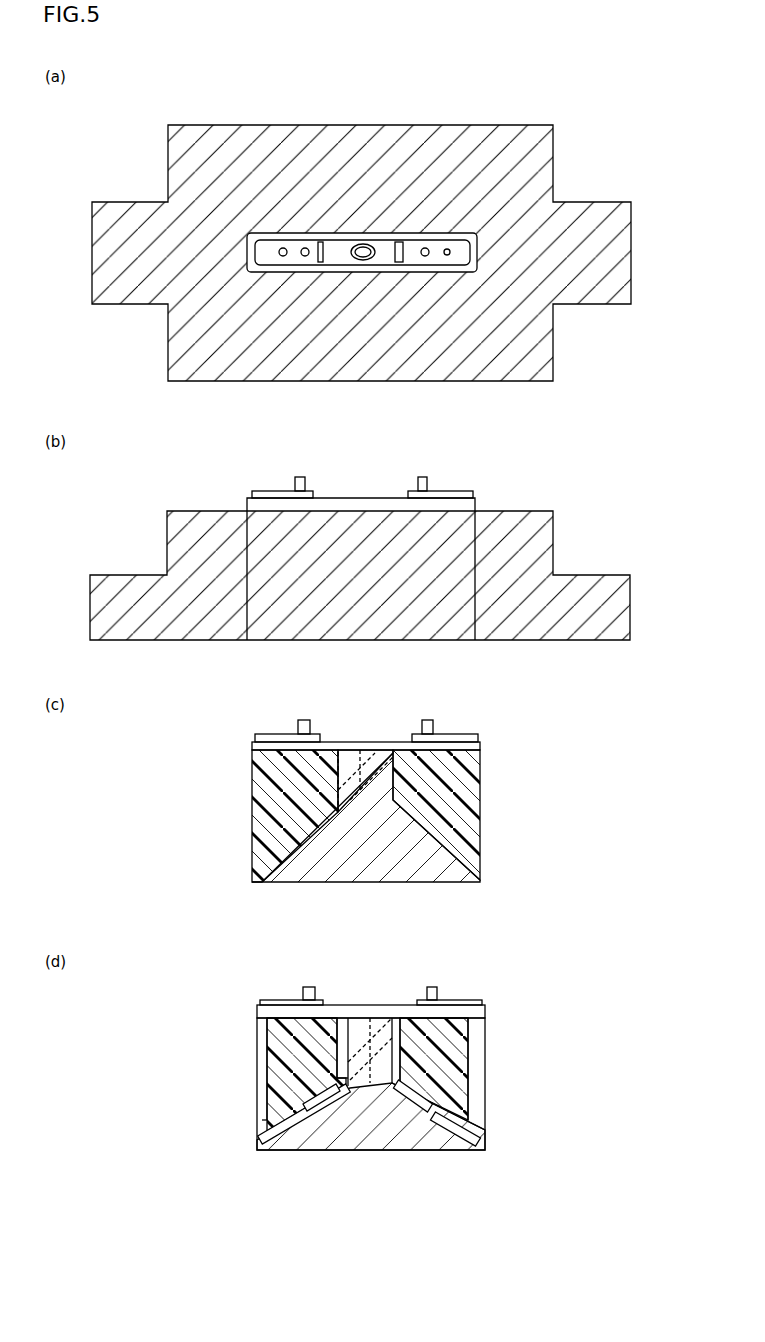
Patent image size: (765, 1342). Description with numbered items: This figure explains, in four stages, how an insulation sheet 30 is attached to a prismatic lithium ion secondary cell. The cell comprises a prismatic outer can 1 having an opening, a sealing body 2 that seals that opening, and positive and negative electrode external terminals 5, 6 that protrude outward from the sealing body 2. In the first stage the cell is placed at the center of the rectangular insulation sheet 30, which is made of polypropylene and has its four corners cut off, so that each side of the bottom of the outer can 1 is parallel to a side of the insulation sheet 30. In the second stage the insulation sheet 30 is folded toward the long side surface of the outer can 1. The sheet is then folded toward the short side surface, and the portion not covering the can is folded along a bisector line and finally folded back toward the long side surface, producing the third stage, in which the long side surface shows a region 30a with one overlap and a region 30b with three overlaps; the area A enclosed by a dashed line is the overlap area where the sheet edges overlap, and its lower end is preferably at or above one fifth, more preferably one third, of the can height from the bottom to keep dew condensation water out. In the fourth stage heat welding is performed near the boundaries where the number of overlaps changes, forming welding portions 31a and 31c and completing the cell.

The prismatic outer can 1 is at (477, 508).
The sealing body 2 is at (262, 242).
The positive electrode external terminal 5 is at (306, 483).
The negative electrode external terminal 6 is at (427, 483).
The insulation sheet 30 is at (537, 173).
The region with one overlap 30a is at (450, 872).
The region with three overlaps 30b is at (458, 833).
The welding portion 31a is at (455, 1112).
The welding portion 31c is at (257, 1057).
The overlap area A is at (392, 758).